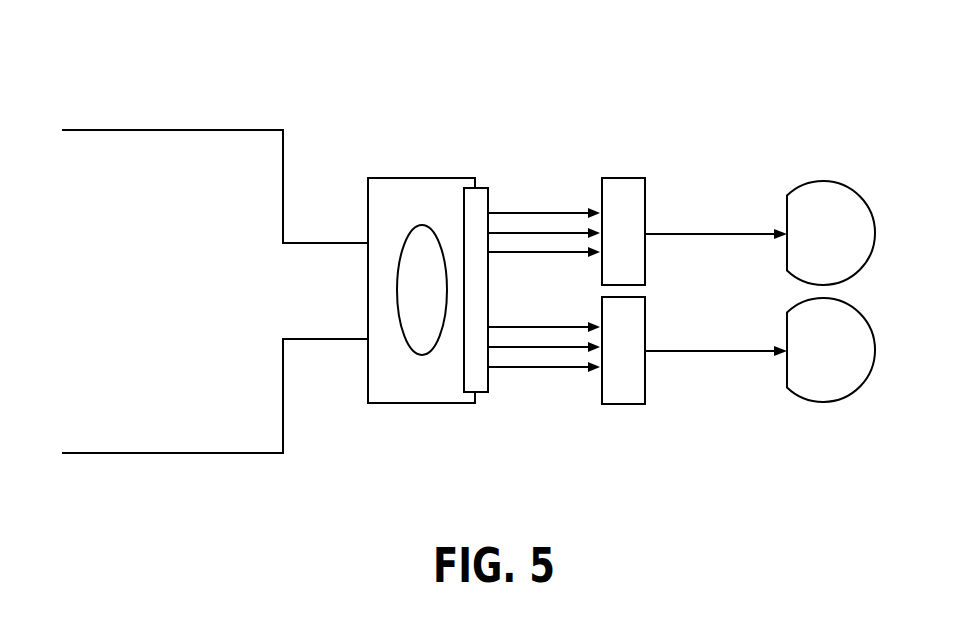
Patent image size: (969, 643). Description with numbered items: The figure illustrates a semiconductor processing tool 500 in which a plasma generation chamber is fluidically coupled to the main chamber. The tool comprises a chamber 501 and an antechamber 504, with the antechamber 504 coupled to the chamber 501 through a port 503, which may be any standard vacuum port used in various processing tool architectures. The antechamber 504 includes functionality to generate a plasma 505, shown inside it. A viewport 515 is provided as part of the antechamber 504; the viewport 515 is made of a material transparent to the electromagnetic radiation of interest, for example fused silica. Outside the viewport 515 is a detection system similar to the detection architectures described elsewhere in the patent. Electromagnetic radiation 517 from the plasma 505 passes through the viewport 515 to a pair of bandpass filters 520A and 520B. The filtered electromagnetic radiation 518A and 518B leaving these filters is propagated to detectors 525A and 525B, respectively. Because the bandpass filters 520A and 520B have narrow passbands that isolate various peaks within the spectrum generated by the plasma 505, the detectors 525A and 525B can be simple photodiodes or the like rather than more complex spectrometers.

The semiconductor processing tool 500 is at (748, 38).
The chamber 501 is at (139, 137).
The port 503 is at (323, 340).
The antechamber 504 is at (418, 178).
The plasma 505 is at (404, 247).
The viewport 515 is at (480, 197).
The electromagnetic radiation 517 is at (518, 210).
The filtered electromagnetic radiation 518A is at (694, 230).
The filtered electromagnetic radiation 518B is at (691, 346).
The bandpass filter 520A is at (626, 190).
The bandpass filter 520B is at (623, 388).
The detector 525A is at (822, 193).
The detector 525B is at (830, 390).